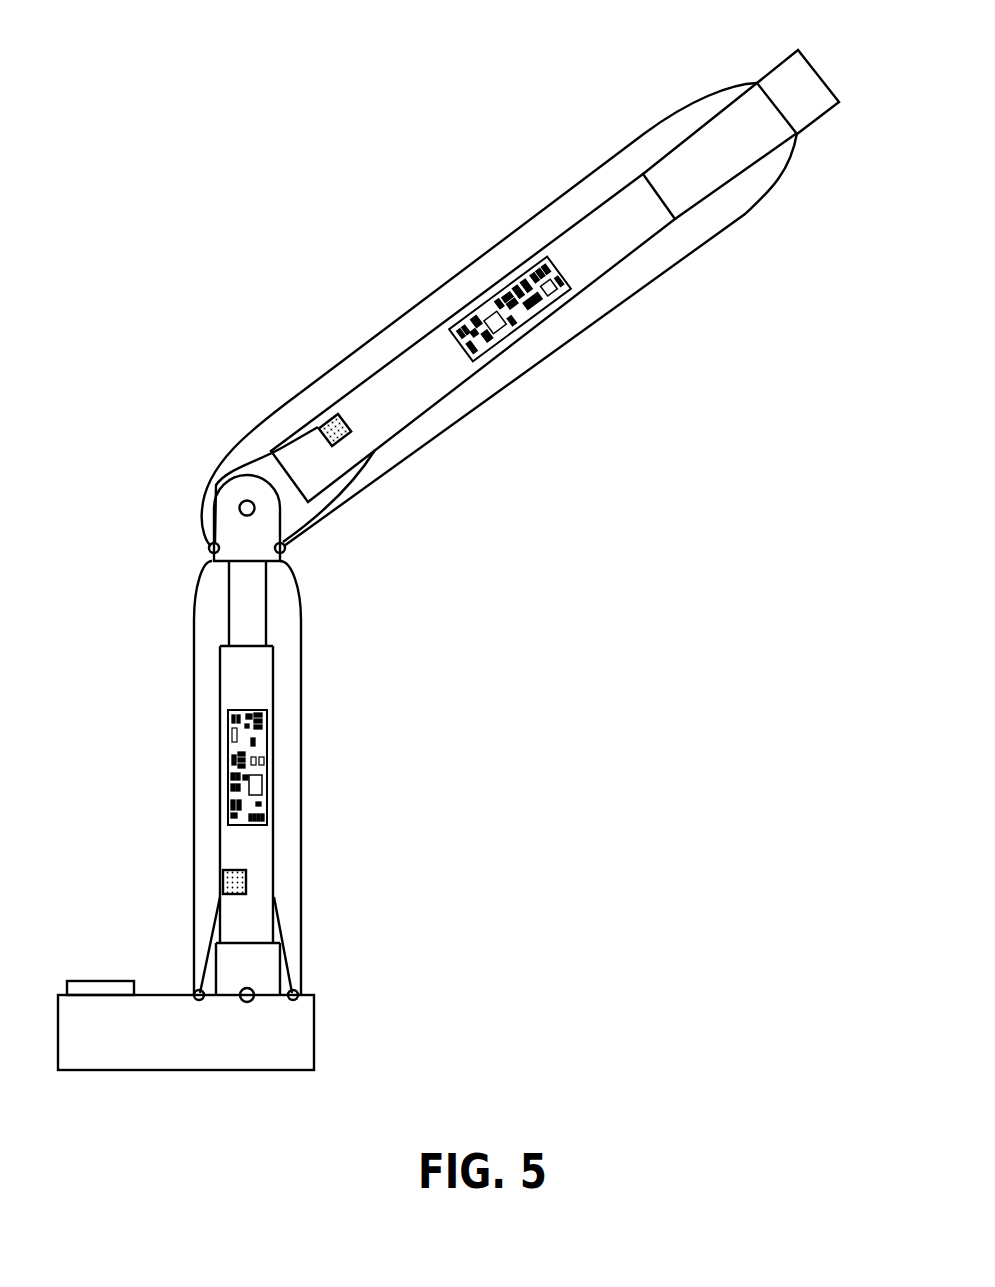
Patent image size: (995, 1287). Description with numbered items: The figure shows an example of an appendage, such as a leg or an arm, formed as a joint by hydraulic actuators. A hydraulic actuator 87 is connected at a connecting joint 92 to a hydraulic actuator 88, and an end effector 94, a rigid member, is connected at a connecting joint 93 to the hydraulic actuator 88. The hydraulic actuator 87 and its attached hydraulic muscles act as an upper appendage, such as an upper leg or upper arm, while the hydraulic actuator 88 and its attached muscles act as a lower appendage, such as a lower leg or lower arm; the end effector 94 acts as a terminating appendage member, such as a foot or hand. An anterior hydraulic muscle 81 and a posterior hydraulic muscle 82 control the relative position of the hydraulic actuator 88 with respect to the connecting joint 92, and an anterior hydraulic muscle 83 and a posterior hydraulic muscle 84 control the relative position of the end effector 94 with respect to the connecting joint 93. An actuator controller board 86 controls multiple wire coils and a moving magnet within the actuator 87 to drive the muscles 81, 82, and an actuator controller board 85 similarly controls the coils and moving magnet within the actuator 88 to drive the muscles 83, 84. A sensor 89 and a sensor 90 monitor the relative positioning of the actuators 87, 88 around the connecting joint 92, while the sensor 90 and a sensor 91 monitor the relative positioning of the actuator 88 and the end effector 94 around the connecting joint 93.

The anterior hydraulic muscle 81 is at (413, 305).
The posterior hydraulic muscle 82 is at (645, 290).
The anterior hydraulic muscle 83 is at (194, 680).
The posterior hydraulic muscle 84 is at (301, 675).
The actuator controller board 85 is at (228, 795).
The actuator controller board 86 is at (535, 325).
The hydraulic actuator 87 is at (717, 187).
The hydraulic actuator 88 is at (266, 607).
The sensor 89 is at (328, 413).
The sensor 90 is at (223, 882).
The sensor 91 is at (77, 977).
The connecting joint 92 is at (247, 516).
The connecting joint 93 is at (265, 985).
The end effector 94 is at (108, 1070).